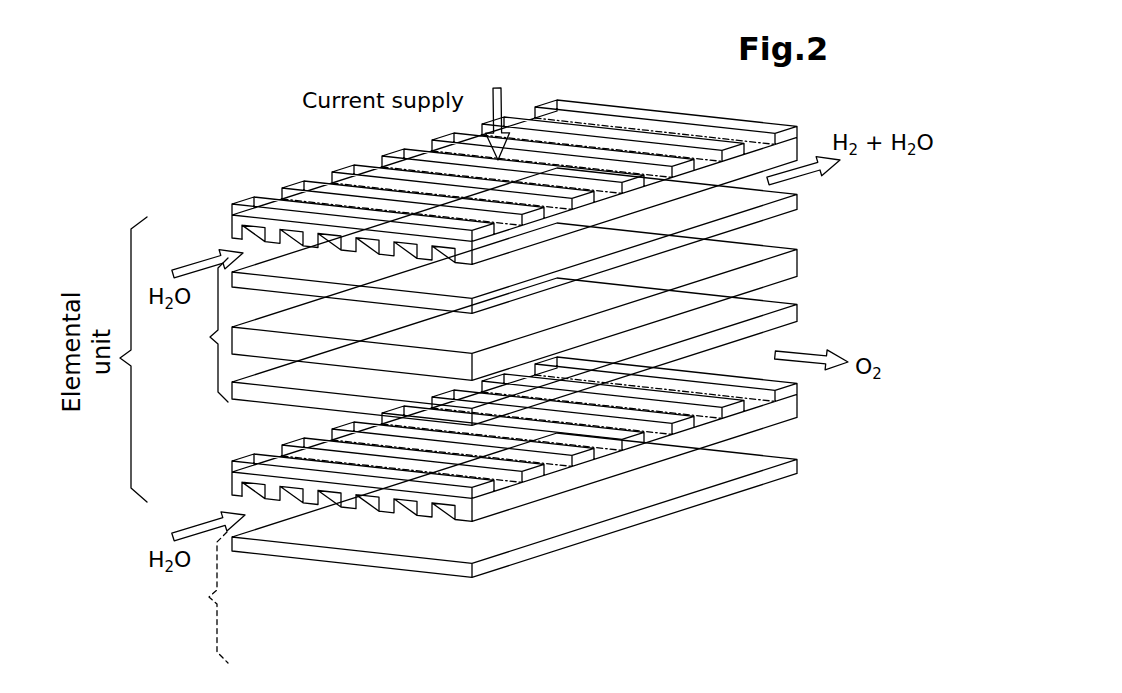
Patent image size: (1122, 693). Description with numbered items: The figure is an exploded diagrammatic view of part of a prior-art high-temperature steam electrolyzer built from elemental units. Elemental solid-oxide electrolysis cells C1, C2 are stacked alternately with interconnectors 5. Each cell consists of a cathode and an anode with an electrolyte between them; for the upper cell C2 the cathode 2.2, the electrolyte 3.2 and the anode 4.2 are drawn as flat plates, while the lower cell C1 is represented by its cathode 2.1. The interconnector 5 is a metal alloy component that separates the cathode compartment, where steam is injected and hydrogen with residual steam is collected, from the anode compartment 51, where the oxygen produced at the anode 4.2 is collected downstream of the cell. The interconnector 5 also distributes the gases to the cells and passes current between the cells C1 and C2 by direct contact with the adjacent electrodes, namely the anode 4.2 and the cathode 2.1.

The interconnector 5 is at (237, 218).
The anode compartment 51 is at (264, 427).
The cathode 2.2 is at (797, 199).
The electrolyte 3.2 is at (797, 262).
The anode 4.2 is at (797, 313).
The cathode 2.1 is at (797, 465).
The elemental electrolysis cell C1 is at (199, 597).
The elemental electrolysis cell C2 is at (199, 330).